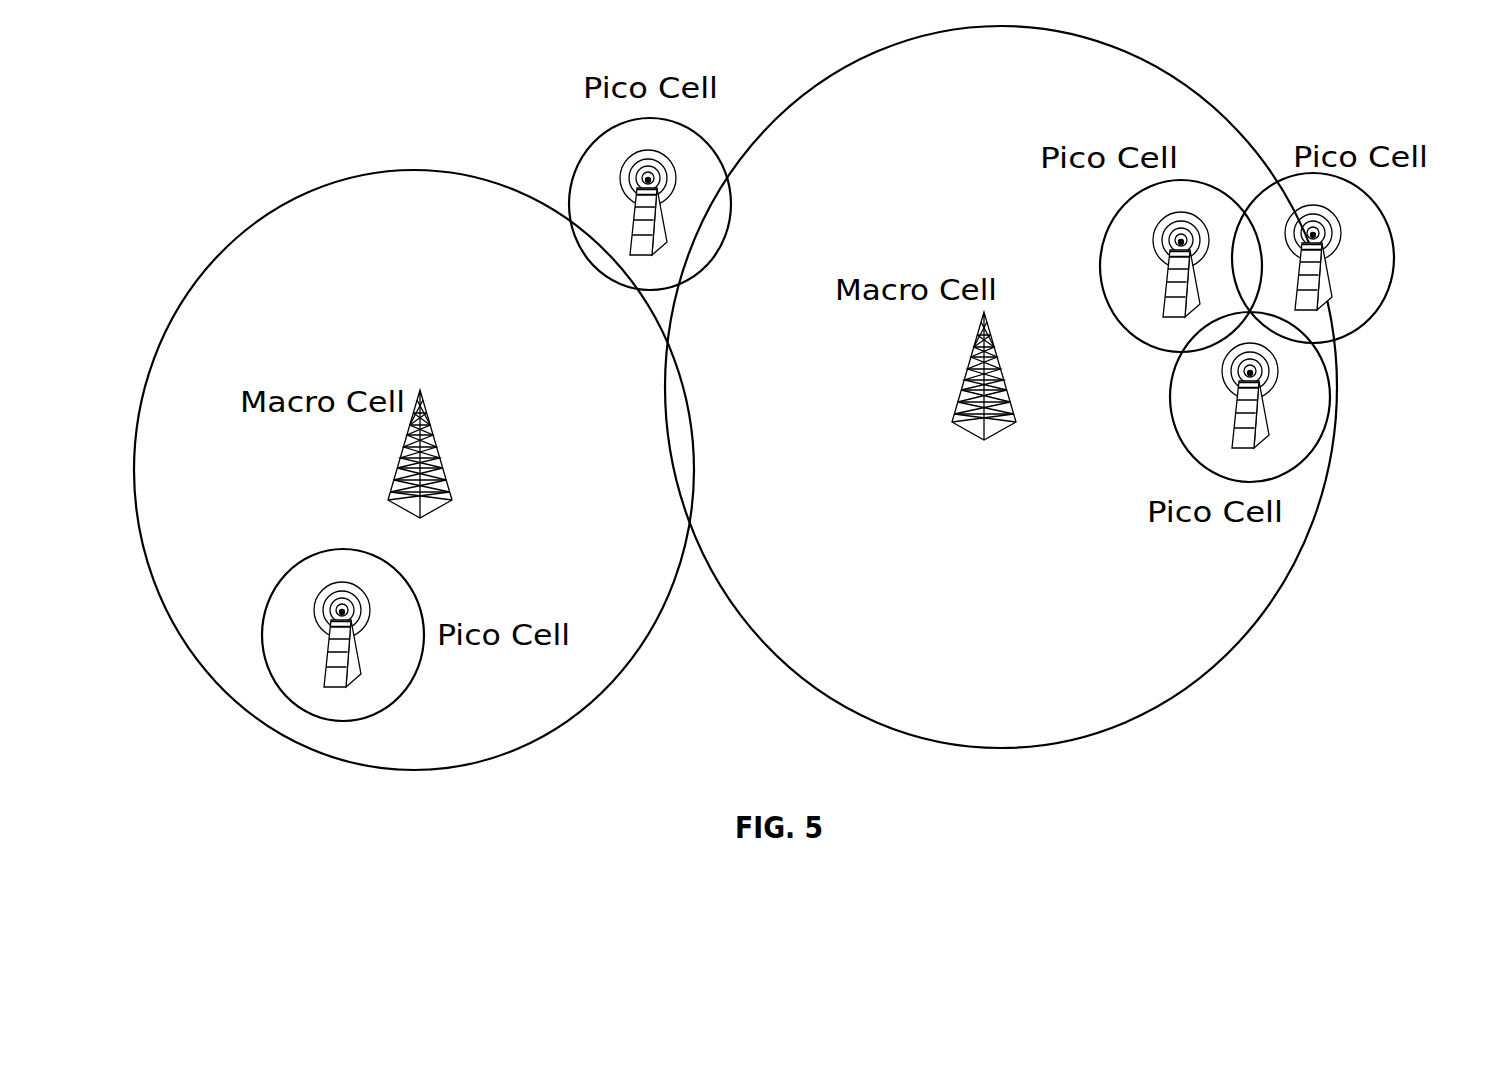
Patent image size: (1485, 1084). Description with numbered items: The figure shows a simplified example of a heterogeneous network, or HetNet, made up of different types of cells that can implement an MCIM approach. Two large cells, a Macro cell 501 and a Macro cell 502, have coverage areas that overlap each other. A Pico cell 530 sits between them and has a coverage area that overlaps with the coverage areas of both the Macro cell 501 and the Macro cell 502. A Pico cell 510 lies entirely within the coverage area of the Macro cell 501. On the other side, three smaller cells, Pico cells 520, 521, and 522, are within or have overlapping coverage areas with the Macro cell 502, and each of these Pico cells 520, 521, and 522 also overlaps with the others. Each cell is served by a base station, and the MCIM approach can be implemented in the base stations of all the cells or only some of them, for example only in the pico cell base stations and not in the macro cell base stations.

The Macro cell 501 is at (410, 447).
The Macro cell 502 is at (972, 367).
The Pico cell 510 is at (276, 632).
The Pico cell 520 is at (1114, 260).
The Pico cell 521 is at (1194, 418).
The Pico cell 522 is at (1363, 303).
The Pico cell 530 is at (588, 178).